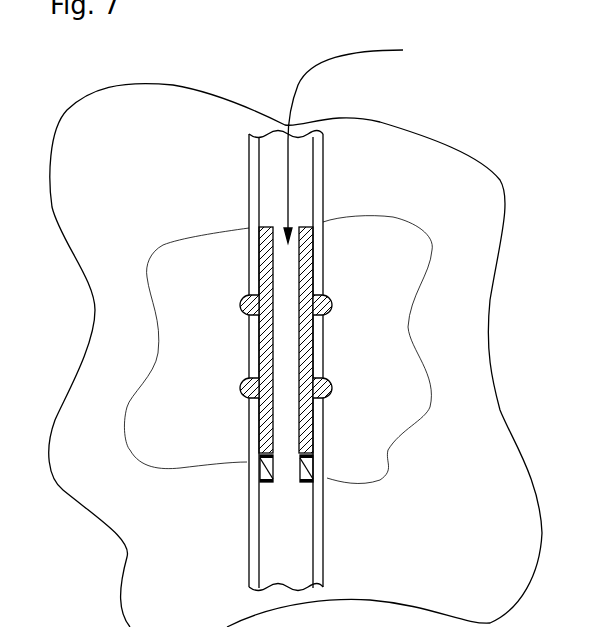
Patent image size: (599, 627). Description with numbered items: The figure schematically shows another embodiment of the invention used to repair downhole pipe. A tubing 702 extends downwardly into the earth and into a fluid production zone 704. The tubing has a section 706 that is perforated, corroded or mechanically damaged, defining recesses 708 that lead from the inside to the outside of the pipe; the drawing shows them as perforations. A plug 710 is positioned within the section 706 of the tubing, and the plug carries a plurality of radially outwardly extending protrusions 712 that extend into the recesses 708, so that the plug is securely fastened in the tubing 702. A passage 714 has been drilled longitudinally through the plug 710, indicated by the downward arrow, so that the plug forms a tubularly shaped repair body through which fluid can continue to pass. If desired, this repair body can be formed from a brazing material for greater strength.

The tubing 702 is at (325, 202).
The fluid production zone 704 is at (367, 328).
The section of the tubing 706 is at (247, 347).
The recesses 708 is at (248, 297).
The plug 710 is at (275, 363).
The radially outwardly extending protrusions 712 is at (243, 378).
The passage 714 is at (365, 146).